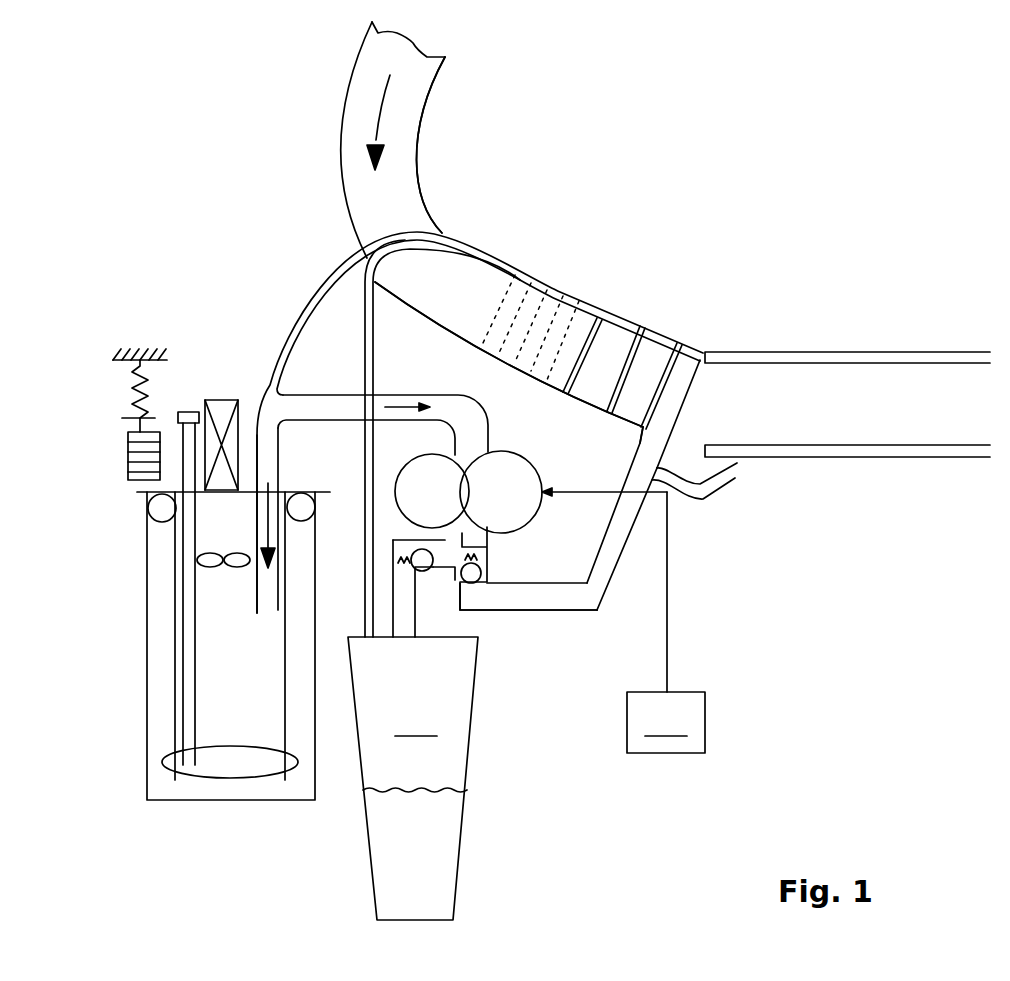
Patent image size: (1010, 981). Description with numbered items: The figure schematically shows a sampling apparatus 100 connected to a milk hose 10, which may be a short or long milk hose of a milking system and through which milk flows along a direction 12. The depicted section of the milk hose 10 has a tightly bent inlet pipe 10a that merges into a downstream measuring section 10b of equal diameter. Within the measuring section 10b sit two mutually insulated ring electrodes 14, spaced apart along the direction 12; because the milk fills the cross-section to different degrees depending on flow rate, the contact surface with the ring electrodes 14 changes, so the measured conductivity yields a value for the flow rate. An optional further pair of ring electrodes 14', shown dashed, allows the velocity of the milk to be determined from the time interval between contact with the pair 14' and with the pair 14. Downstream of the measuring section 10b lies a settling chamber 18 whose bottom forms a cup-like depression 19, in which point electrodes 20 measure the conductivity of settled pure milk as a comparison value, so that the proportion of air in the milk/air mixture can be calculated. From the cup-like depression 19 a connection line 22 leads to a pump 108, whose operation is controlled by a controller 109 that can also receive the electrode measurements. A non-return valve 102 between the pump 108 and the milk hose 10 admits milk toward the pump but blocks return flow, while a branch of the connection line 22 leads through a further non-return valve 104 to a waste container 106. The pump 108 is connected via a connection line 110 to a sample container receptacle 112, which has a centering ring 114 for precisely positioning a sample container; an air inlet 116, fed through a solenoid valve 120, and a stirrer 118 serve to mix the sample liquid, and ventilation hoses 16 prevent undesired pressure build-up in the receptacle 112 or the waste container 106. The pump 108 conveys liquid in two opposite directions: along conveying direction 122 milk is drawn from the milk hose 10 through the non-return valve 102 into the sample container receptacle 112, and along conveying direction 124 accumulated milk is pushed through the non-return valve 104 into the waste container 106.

The sampling apparatus 100 is at (86, 112).
The milk hose 10 is at (452, 108).
The inlet pipe 10a is at (436, 186).
The measuring section 10b is at (582, 293).
The direction 12 is at (377, 100).
The ring electrodes 14 is at (627, 343).
The pair of ring electrodes 14' is at (509, 354).
The ventilation hoses 16 is at (352, 303).
The settling chamber 18 is at (685, 422).
The cup-like depression 19 is at (640, 437).
The point electrodes 20 is at (715, 510).
The connection line 22 is at (558, 612).
The non-return valve 102 is at (485, 598).
The non-return valve 104 is at (490, 548).
The waste container 106 is at (413, 778).
The pump 108 is at (533, 450).
The controller 109 is at (666, 622).
The connection line 110 is at (322, 424).
The sample container receptacle 112 is at (147, 732).
The centering ring 114 is at (226, 800).
The air inlet 116 is at (175, 622).
The stirrer 118 is at (218, 385).
The solenoid valve 120 is at (95, 448).
The conveying direction 122 is at (257, 524).
The conveying direction 124 is at (400, 405).